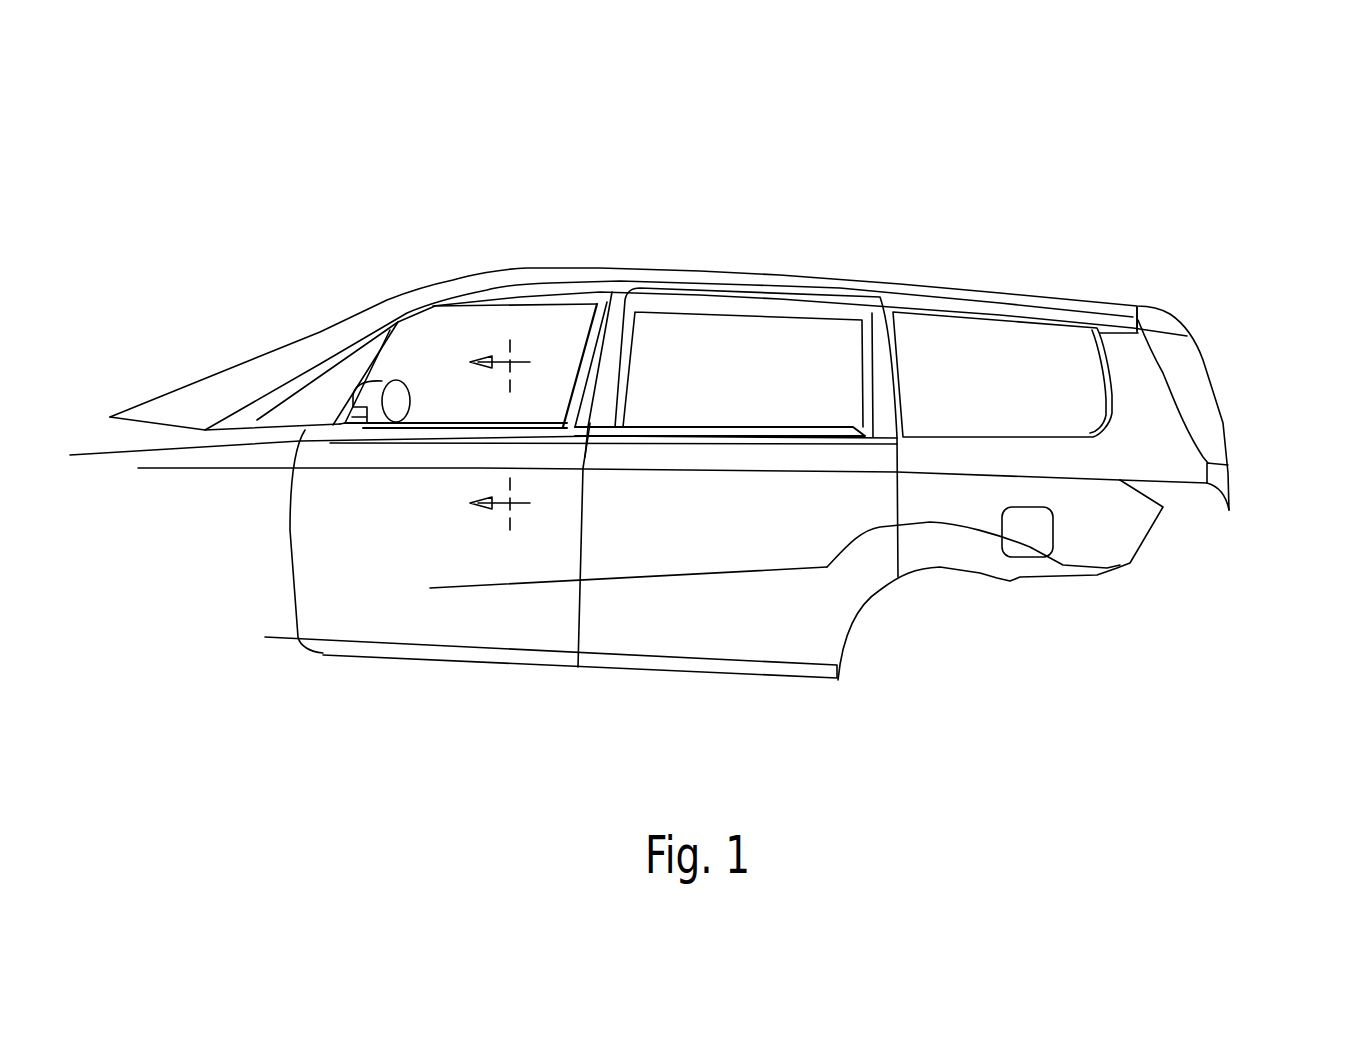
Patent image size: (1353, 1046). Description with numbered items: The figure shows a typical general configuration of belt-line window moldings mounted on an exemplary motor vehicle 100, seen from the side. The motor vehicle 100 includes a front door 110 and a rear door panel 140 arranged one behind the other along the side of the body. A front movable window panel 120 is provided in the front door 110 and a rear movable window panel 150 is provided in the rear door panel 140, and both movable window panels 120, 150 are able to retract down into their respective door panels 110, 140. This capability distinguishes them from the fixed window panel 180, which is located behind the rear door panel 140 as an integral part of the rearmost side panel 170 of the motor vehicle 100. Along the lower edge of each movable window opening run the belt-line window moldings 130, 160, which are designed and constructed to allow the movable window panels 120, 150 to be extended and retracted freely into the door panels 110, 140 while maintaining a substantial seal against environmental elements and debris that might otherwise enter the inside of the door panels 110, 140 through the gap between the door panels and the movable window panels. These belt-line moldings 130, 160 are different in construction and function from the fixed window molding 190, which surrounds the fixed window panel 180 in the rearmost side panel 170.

The motor vehicle 100 is at (232, 560).
The front door 110 is at (357, 602).
The front movable window panel 120 is at (548, 337).
The belt-line window molding 130 is at (413, 430).
The rear door panel 140 is at (697, 618).
The rear movable window panel 150 is at (682, 330).
The belt-line window molding 160 is at (742, 435).
The rearmost side panel 170 is at (1120, 533).
The fixed window panel 180 is at (1005, 353).
The fixed window molding 190 is at (1113, 418).